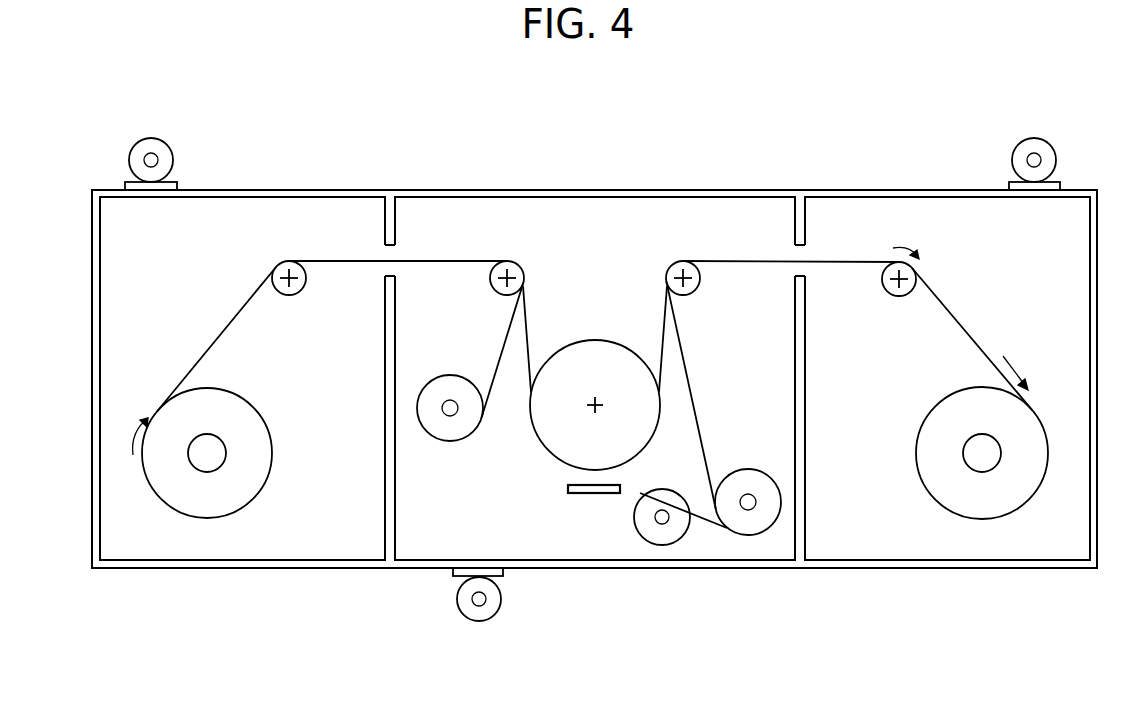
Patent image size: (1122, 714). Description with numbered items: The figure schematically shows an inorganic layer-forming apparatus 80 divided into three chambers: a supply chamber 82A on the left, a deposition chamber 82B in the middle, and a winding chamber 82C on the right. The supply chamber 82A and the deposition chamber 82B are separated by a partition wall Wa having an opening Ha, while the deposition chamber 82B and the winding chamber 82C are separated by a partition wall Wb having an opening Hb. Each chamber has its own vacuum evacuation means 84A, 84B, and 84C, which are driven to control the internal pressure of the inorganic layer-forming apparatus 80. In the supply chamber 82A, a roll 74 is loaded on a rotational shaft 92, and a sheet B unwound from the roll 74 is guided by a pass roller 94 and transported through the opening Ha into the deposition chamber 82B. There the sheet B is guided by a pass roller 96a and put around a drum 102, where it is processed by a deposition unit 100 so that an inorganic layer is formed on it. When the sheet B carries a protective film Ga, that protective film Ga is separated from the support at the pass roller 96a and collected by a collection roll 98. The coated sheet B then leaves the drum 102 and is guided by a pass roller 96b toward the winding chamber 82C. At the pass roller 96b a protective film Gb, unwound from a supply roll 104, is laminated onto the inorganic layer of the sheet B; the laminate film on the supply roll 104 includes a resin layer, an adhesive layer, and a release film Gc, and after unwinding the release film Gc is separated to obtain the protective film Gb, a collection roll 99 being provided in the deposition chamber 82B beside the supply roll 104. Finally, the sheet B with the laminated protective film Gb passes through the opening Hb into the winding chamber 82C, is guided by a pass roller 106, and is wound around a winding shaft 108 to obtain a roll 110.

The inorganic layer-forming apparatus 80 is at (592, 696).
The supply chamber 82A is at (291, 189).
The deposition chamber 82B is at (599, 189).
The winding chamber 82C is at (879, 189).
The vacuum evacuation means 84A is at (142, 149).
The vacuum evacuation means 84B is at (468, 610).
The vacuum evacuation means 84C is at (1022, 150).
The partition wall Wa is at (385, 226).
The partition wall Wb is at (795, 226).
The opening Ha is at (397, 245).
The opening Hb is at (808, 247).
The roll 74 is at (162, 488).
The rotational shaft 92 is at (213, 462).
The sheet B is at (213, 345).
The pass roller 94 is at (289, 296).
The pass roller 96a is at (497, 293).
The pass roller 96b is at (693, 292).
The collection roll 98 is at (442, 385).
The collection roll 99 is at (661, 519).
The deposition unit 100 is at (571, 490).
The drum 102 is at (595, 341).
The supply roll 104 is at (728, 478).
The pass roller 106 is at (890, 296).
The winding shaft 108 is at (988, 462).
The roll 110 is at (940, 487).
The protective film Ga is at (487, 402).
The protective film Gb is at (692, 400).
The release film Gc is at (704, 516).